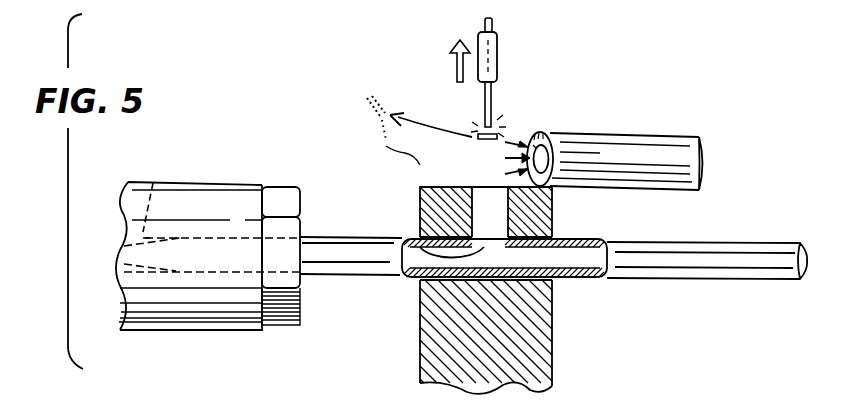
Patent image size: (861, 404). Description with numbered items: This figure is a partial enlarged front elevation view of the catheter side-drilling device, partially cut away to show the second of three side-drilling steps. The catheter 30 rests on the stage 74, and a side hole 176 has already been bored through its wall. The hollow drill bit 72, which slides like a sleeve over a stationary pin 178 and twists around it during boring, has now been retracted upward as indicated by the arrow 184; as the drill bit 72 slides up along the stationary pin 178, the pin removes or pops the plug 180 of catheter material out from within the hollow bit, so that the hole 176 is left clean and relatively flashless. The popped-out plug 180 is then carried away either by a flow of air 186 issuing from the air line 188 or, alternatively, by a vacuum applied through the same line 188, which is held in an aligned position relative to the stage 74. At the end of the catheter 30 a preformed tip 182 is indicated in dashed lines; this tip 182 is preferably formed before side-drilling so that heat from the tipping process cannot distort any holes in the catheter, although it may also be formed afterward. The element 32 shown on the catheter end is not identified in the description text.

The catheter 30 is at (706, 271).
The knurled handle 32 is at (197, 307).
The drill bit 72 is at (498, 63).
The stage 74 is at (548, 365).
The side hole 176 is at (418, 240).
The stationary pin 178 is at (492, 23).
The plug 180 is at (474, 138).
The preformed tip 182 is at (154, 181).
The arrow 184 is at (455, 58).
The flow of air 186 is at (528, 140).
The air line 188 is at (607, 187).